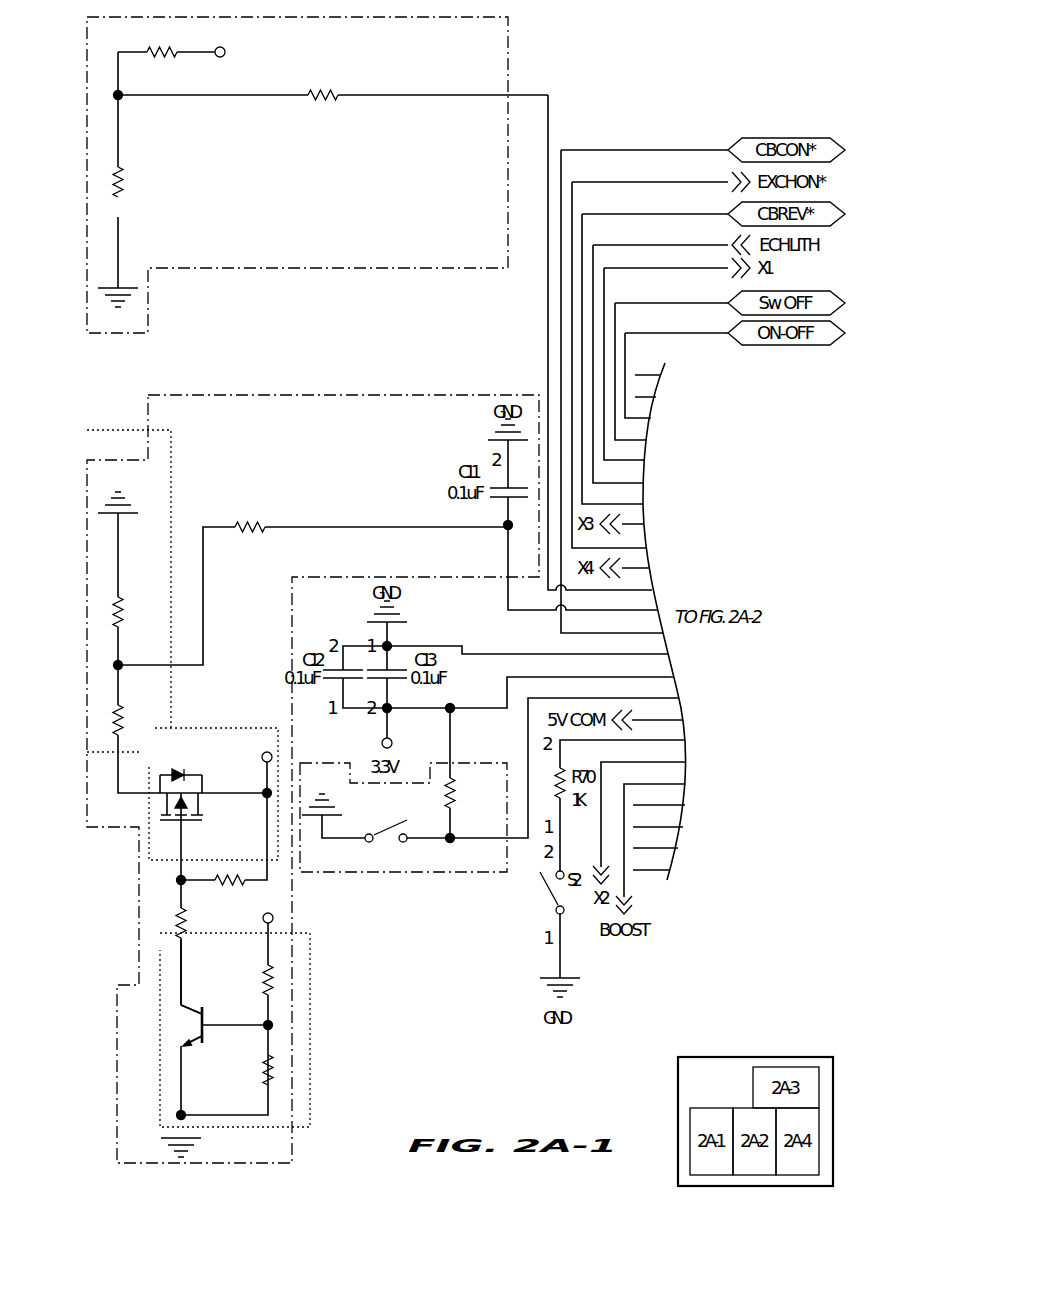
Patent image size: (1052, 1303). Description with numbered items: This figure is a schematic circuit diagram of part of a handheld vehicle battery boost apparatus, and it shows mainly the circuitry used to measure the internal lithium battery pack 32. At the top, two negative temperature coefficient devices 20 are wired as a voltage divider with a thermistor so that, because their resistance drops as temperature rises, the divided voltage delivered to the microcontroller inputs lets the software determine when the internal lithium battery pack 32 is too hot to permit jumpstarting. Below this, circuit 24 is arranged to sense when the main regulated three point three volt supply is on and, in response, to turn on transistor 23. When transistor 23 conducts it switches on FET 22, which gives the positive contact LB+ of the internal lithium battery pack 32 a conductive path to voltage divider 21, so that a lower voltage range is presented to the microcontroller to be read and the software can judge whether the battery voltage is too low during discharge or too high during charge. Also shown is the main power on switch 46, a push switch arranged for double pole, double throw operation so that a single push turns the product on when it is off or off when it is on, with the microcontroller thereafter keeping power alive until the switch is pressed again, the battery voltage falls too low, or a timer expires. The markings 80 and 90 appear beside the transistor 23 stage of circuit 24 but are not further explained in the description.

The negative temperature coefficient devices 20 is at (508, 58).
The voltage divider 21 is at (127, 430).
The FET 22 is at (213, 727).
The transistor 23 is at (310, 1050).
The circuit 24 is at (383, 395).
The internal lithium battery pack 32 is at (172, 972).
The main power on switch 46 is at (423, 873).
The transistor emitter 80 is at (170, 1038).
The transistor collector 90 is at (170, 1011).